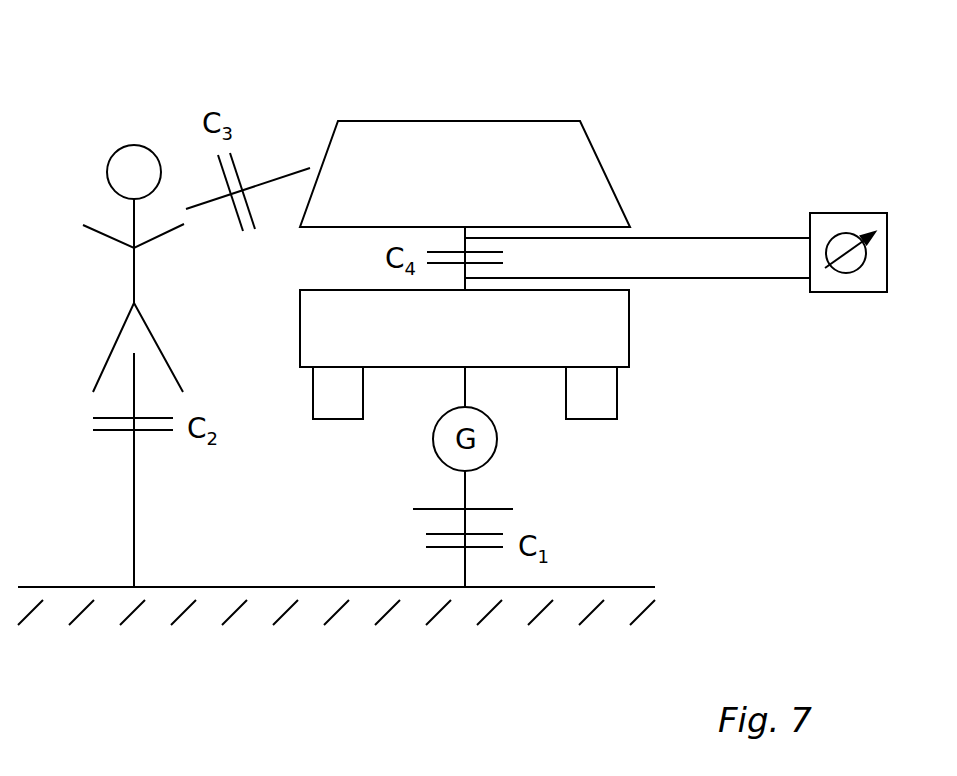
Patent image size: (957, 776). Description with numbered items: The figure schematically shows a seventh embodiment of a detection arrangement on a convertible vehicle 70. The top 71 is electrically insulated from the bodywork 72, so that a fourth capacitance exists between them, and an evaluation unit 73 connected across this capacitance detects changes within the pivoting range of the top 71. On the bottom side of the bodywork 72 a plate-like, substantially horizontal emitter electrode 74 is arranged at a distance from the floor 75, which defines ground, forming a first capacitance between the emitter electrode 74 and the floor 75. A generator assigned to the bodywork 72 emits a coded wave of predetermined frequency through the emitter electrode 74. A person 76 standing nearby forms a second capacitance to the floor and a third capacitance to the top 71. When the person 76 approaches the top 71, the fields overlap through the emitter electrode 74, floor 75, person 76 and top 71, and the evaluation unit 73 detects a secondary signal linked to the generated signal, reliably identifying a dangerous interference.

The convertible vehicle 70 is at (732, 174).
The top 71 is at (520, 173).
The bodywork 72 is at (570, 321).
The evaluation unit 73 is at (853, 282).
The emitter electrode 74 is at (530, 508).
The floor 75 is at (627, 588).
The person 76 is at (116, 272).